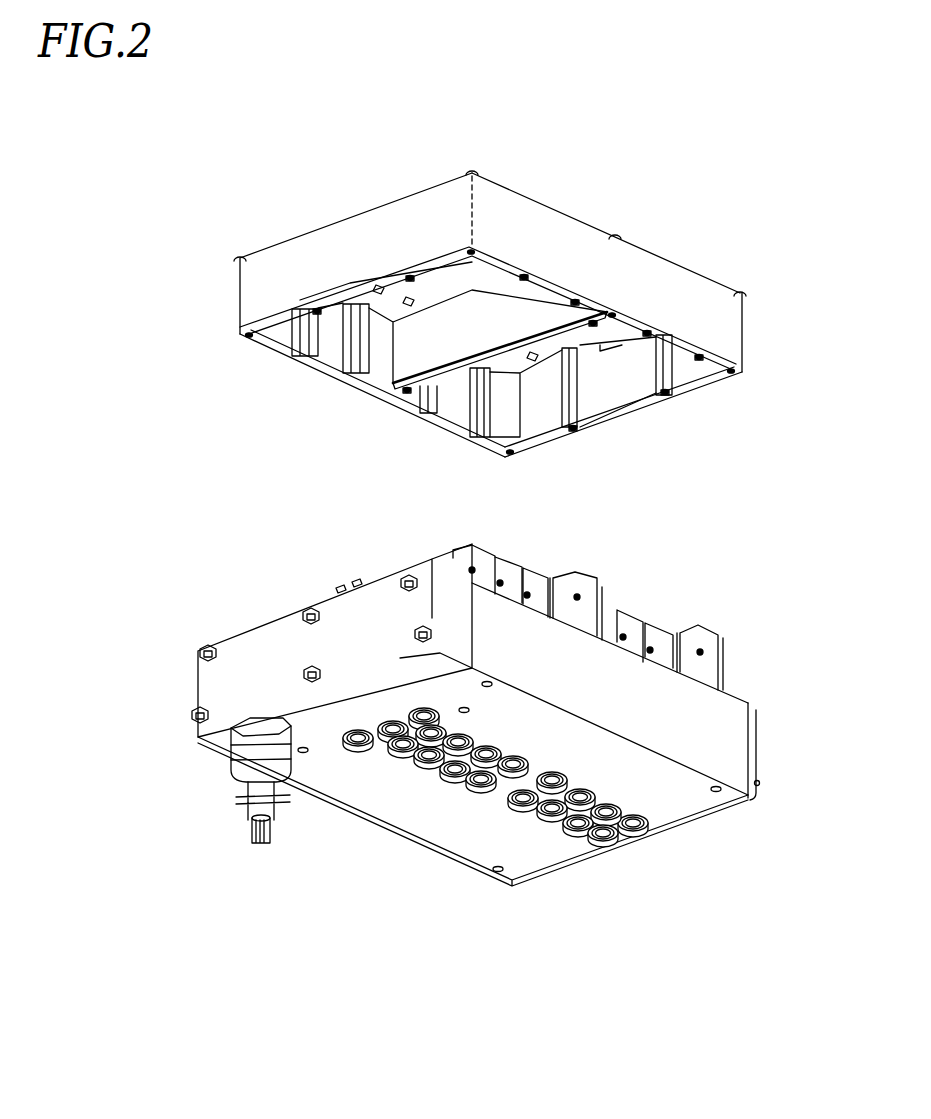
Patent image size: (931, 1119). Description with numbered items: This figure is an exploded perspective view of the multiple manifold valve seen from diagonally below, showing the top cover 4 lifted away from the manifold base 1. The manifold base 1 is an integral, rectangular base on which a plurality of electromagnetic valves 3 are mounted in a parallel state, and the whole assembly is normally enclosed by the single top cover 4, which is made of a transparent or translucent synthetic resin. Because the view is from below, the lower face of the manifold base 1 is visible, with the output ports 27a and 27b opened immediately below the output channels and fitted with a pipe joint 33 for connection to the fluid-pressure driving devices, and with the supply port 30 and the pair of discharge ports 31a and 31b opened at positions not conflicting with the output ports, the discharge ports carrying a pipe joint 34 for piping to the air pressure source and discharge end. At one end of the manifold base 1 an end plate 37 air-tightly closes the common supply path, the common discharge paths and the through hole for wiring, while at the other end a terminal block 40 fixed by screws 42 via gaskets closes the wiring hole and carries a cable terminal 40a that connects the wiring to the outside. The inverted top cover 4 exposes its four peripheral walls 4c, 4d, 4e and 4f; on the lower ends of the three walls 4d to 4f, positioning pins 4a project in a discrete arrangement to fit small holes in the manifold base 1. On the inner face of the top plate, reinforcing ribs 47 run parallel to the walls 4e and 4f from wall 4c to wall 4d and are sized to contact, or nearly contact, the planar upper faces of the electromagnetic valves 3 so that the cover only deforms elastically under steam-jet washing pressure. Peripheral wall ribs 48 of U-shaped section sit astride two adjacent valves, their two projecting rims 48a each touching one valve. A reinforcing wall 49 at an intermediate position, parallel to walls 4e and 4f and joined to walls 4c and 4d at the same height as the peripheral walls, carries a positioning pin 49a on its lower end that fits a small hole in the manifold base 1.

The manifold base 1 is at (727, 735).
The electromagnetic valves 3 is at (663, 637).
The top cover 4 is at (547, 188).
The positioning pins 4a is at (410, 284).
The peripheral wall 4c is at (268, 347).
The peripheral wall 4d is at (695, 305).
The peripheral wall 4e is at (330, 256).
The peripheral wall 4f is at (645, 386).
The supply port 30 is at (392, 742).
The discharge port 31a is at (358, 748).
The discharge port 31b is at (428, 765).
The pipe joint 33 is at (603, 842).
The pipe joint 34 is at (415, 710).
The output port 27a is at (548, 815).
The output port 27b is at (588, 796).
The end plate 37 is at (740, 803).
The terminal block 40 is at (261, 652).
The cable terminal 40a is at (236, 750).
The screws 42 is at (193, 713).
The reinforcing ribs 47 is at (472, 268).
The peripheral wall ribs 48 is at (303, 360).
The projecting rims 48a is at (293, 342).
The reinforcing wall 49 is at (445, 352).
The positioning pin 49a is at (410, 282).